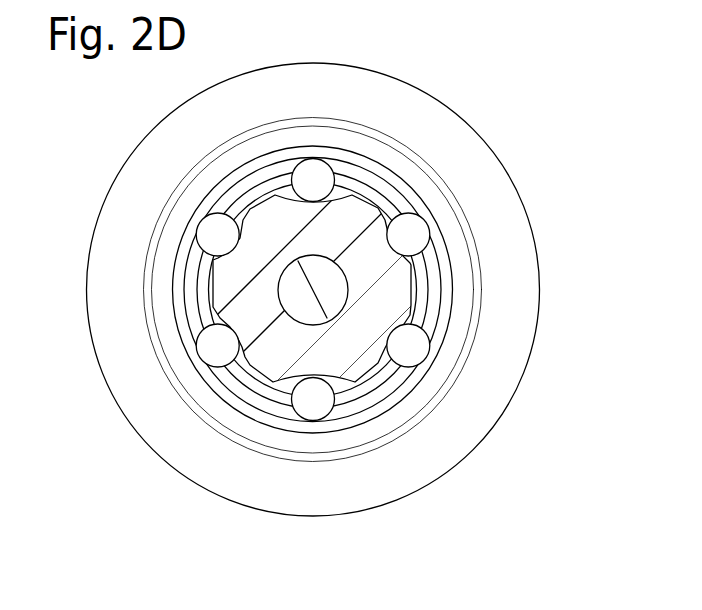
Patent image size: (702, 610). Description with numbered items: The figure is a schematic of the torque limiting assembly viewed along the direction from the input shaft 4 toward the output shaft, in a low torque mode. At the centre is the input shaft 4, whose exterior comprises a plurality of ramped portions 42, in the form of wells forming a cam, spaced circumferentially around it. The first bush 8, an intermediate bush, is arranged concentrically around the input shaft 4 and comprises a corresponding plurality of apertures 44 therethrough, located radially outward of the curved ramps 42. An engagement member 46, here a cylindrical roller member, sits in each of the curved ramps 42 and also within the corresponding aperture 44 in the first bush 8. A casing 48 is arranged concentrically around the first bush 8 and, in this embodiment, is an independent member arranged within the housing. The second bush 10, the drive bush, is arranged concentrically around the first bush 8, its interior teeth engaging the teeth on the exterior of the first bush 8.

The input shaft 4 is at (392, 283).
The first bush 8 is at (425, 297).
The second bush 10 is at (188, 294).
The ramped portions 42 is at (387, 208).
The apertures 44 is at (425, 323).
The engagement member 46 is at (418, 349).
The casing 48 is at (397, 402).